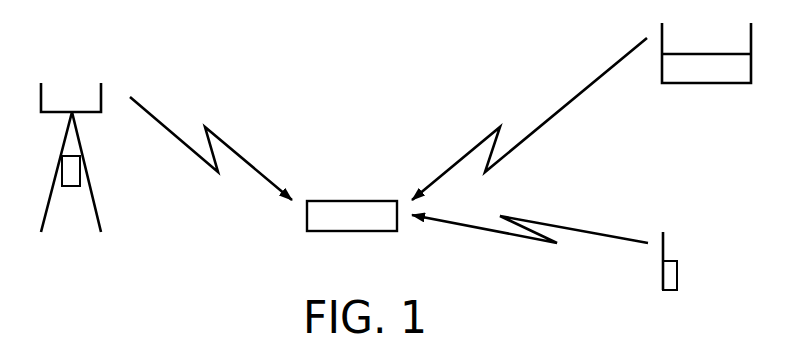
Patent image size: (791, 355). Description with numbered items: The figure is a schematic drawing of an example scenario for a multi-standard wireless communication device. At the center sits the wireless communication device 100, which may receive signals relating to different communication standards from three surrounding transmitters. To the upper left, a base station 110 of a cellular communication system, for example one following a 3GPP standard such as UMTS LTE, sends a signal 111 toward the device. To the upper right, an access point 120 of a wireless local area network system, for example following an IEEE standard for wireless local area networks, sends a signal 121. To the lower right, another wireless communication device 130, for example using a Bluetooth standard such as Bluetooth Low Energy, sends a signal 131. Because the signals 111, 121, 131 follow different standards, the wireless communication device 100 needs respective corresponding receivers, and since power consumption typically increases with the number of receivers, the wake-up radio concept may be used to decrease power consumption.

The wireless communication device 100 is at (352, 216).
The base station 110 is at (82, 158).
The signal 111 is at (232, 150).
The access point 120 is at (706, 53).
The signal 121 is at (472, 148).
The wireless communication device 130 is at (677, 289).
The signal 131 is at (617, 237).